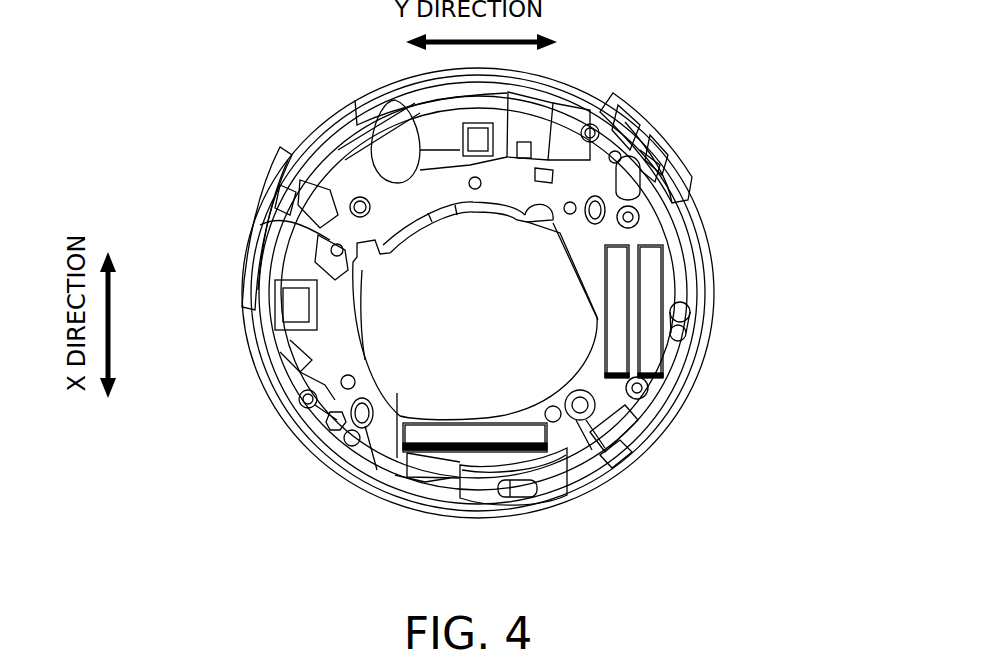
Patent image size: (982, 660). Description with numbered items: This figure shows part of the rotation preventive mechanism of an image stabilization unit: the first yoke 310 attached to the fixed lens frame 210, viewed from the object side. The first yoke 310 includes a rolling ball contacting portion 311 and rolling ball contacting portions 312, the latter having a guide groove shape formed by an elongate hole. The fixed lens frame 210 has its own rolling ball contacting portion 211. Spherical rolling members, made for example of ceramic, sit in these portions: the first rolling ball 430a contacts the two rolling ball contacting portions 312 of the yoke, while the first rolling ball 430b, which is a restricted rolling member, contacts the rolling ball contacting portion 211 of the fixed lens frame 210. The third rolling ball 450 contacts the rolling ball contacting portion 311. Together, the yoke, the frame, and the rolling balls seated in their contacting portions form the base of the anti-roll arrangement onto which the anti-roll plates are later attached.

The fixed lens frame 210 is at (630, 103).
The rolling ball contacting portion 211 is at (262, 225).
The first yoke 310 is at (347, 150).
The rolling ball contacting portion 311 is at (628, 445).
The rolling ball contacting portion 312 is at (600, 243).
The first rolling ball 430a is at (653, 150).
The first rolling ball 430b is at (258, 200).
The third rolling ball 450 is at (568, 490).